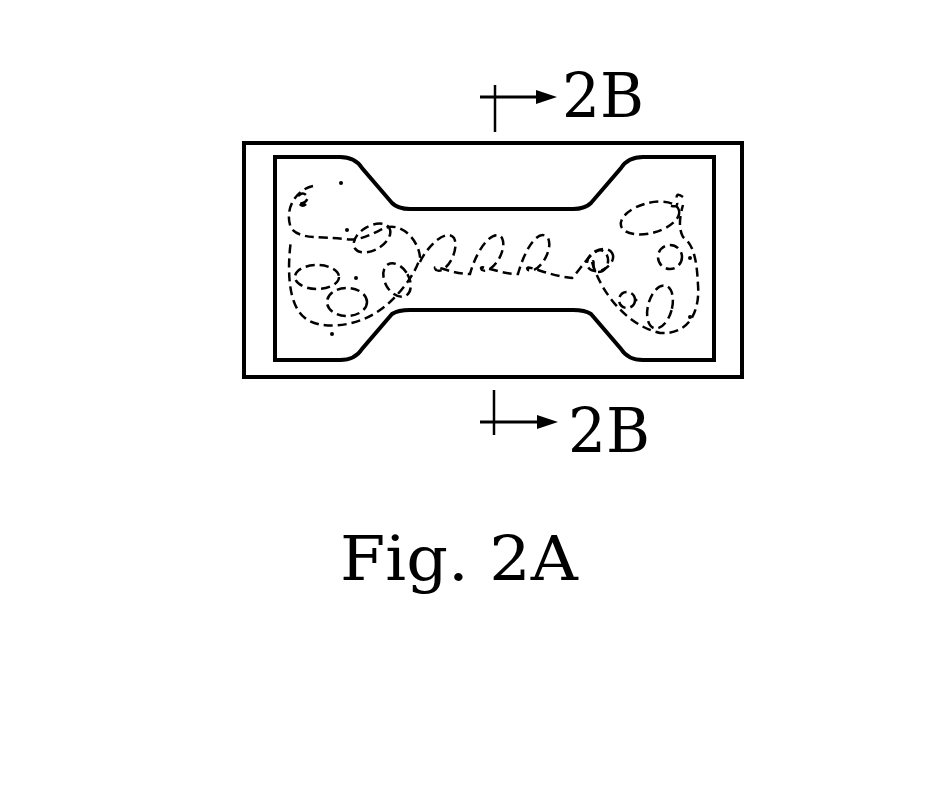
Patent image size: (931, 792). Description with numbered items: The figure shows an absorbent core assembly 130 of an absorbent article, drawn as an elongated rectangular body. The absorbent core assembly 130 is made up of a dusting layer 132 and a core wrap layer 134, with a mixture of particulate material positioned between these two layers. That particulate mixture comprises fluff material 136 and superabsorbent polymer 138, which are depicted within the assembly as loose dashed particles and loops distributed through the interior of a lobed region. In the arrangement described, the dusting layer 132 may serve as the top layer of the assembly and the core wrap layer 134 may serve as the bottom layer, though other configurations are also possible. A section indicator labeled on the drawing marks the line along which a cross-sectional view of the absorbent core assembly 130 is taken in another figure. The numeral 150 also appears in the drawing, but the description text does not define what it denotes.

The absorbent core assembly 130 is at (172, 158).
The dusting layer 132 is at (386, 165).
The core wrap layer 134 is at (458, 176).
The fluff material 136 is at (683, 197).
The superabsorbent polymer 138 is at (718, 323).
The sample material 150 is at (275, 262).